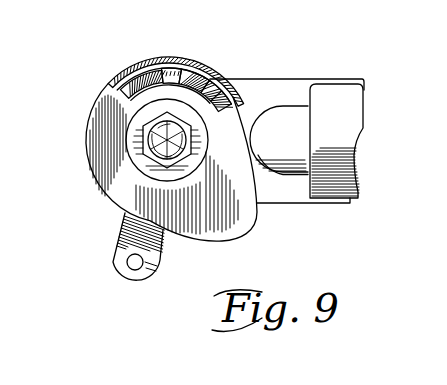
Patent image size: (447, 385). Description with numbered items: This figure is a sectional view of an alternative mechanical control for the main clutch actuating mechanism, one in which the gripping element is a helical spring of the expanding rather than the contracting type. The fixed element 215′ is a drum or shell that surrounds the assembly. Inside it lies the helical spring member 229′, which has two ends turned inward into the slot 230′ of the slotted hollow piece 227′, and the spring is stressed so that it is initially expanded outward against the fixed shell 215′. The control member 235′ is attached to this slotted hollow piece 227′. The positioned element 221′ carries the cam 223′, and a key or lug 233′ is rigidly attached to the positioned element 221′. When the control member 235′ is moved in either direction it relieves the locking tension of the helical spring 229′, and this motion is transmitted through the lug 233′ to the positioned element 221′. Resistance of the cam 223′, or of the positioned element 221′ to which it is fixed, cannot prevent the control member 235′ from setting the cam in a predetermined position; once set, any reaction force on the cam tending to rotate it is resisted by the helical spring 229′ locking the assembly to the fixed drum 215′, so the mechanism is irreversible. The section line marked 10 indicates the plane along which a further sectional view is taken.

The section line 10 is at (218, 49).
The fixed element 215′ is at (234, 103).
The positioned element 221′ is at (192, 98).
The cam 223′ is at (256, 225).
The slotted hollow piece 227′ is at (208, 88).
The helical spring member 229′ is at (121, 85).
The slot 230′ is at (205, 96).
The key or lug 233′ is at (144, 109).
The control member 235′ is at (127, 242).